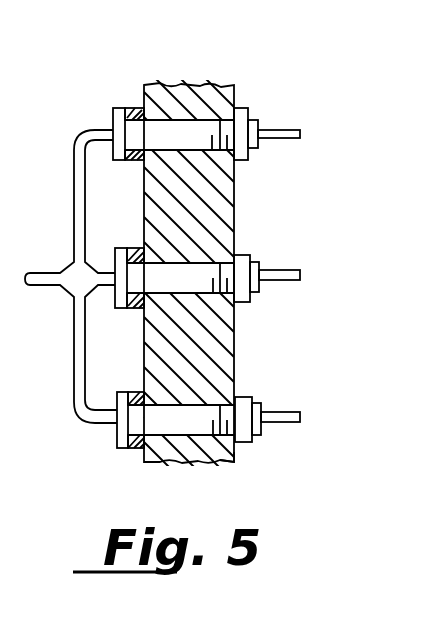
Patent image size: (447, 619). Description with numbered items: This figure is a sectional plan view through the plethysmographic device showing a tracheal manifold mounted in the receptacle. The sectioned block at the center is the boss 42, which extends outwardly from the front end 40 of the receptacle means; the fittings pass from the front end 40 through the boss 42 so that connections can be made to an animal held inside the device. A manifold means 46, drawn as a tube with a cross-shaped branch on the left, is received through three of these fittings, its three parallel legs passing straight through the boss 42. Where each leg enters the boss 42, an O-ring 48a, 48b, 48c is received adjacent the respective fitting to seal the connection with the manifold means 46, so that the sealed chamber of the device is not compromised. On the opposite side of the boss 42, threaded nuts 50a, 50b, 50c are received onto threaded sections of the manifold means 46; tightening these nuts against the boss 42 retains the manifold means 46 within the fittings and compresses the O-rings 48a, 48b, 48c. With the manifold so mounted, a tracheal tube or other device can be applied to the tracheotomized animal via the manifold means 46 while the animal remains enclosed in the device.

The front end 40 is at (240, 452).
The boss 42 is at (213, 205).
The manifold means 46 is at (90, 137).
The O-ring 48a is at (133, 108).
The O-ring 48b is at (137, 250).
The O-ring 48c is at (140, 447).
The threaded nut 50a is at (248, 108).
The threaded nut 50b is at (248, 257).
The threaded nut 50c is at (245, 397).